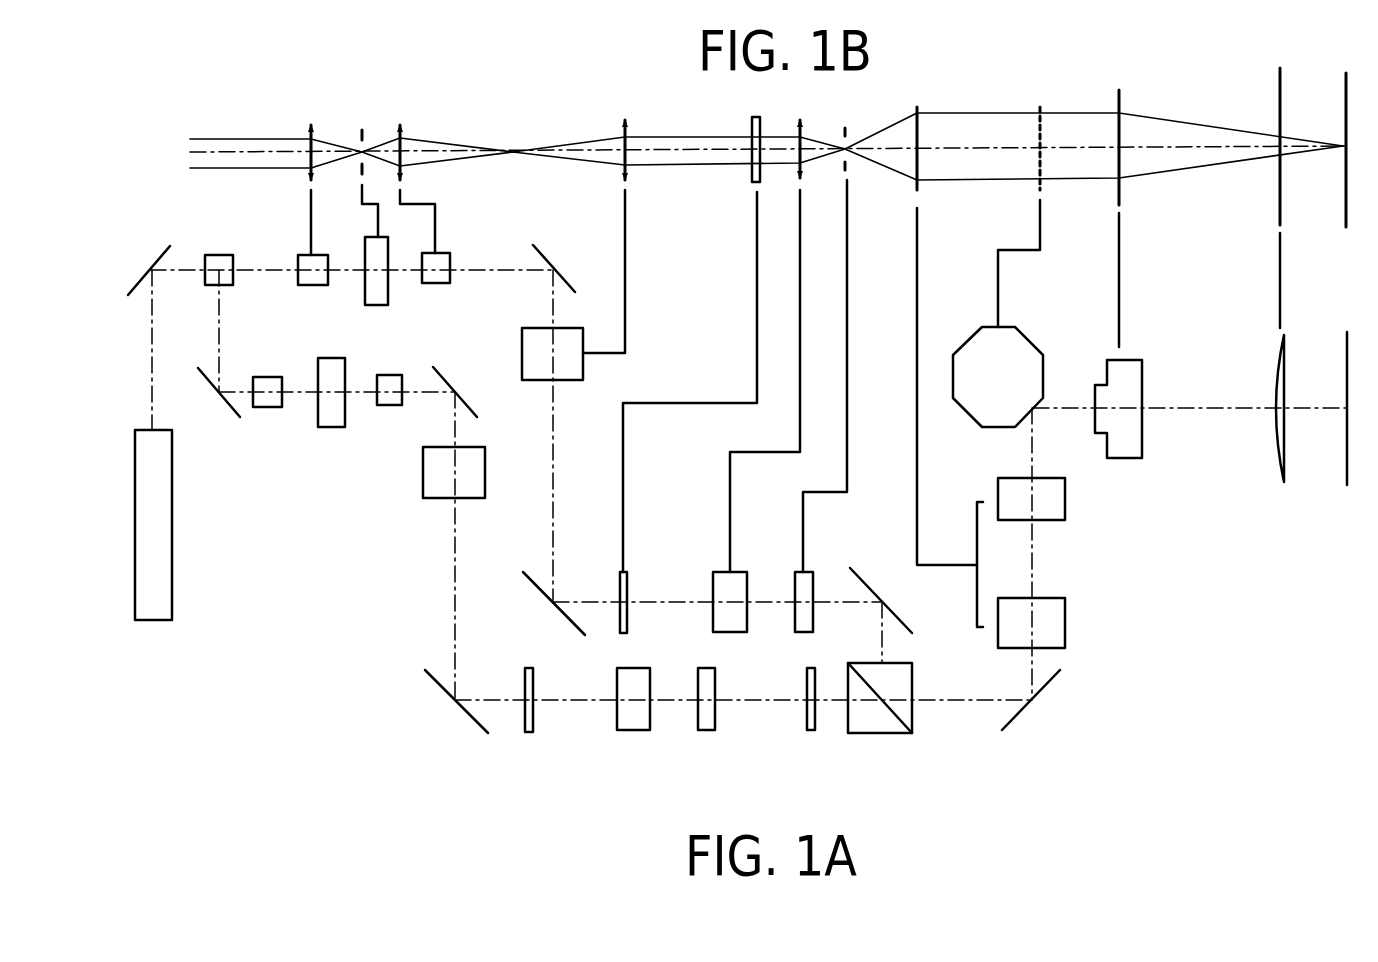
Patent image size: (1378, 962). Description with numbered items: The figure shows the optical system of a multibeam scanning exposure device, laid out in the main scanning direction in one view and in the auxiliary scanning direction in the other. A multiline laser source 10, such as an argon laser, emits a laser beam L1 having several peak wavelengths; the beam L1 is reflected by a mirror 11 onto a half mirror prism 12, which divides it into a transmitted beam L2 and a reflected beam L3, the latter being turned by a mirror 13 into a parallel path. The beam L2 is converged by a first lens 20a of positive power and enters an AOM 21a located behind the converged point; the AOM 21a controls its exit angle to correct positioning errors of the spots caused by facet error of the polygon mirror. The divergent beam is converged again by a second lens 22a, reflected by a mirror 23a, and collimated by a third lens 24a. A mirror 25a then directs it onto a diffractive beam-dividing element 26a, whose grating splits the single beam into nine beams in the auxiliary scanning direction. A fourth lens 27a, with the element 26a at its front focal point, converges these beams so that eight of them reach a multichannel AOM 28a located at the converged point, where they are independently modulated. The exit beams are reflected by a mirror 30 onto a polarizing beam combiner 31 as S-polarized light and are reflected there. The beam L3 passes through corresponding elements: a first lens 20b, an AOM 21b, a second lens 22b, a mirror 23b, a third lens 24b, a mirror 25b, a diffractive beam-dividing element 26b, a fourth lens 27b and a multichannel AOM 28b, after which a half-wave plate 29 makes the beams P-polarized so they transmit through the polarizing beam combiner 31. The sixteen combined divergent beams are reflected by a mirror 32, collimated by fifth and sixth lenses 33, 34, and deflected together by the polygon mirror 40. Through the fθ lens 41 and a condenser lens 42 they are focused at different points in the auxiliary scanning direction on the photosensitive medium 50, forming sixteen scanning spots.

The multiline laser source 10 is at (172, 542).
The mirror 11 is at (167, 253).
The half mirror prism 12 is at (221, 255).
The mirror 13 is at (218, 380).
The laser beam L1 is at (150, 348).
The beam L2 is at (262, 270).
The beam L3 is at (298, 392).
The first lens 20a is at (313, 285).
The first lens 20b is at (267, 407).
The AOM 21a is at (377, 305).
The AOM 21b is at (330, 427).
The second lens 22a is at (436, 283).
The second lens 22b is at (390, 405).
The mirror 23a is at (536, 248).
The mirror 23b is at (476, 406).
The third lens 24a is at (583, 367).
The third lens 24b is at (423, 485).
The mirror 25a is at (529, 578).
The mirror 25b is at (428, 674).
The diffractive beam-dividing element 26a is at (627, 625).
The diffractive beam-dividing element 26b is at (529, 732).
The fourth lens 27a is at (747, 625).
The fourth lens 27b is at (633, 730).
The multichannel AOM 28a is at (813, 625).
The multichannel AOM 28b is at (707, 730).
The half-wave plate 29 is at (811, 730).
The mirror 30 is at (852, 570).
The polarizing beam combiner 31 is at (880, 733).
The mirror 32 is at (1054, 674).
The fifth lens 33 is at (1065, 623).
The sixth lens 34 is at (1065, 502).
The polygon mirror 40 is at (966, 400).
The fθ lens 41 is at (1130, 458).
The condenser lens 42 is at (1279, 483).
The photosensitive medium 50 is at (1346, 486).